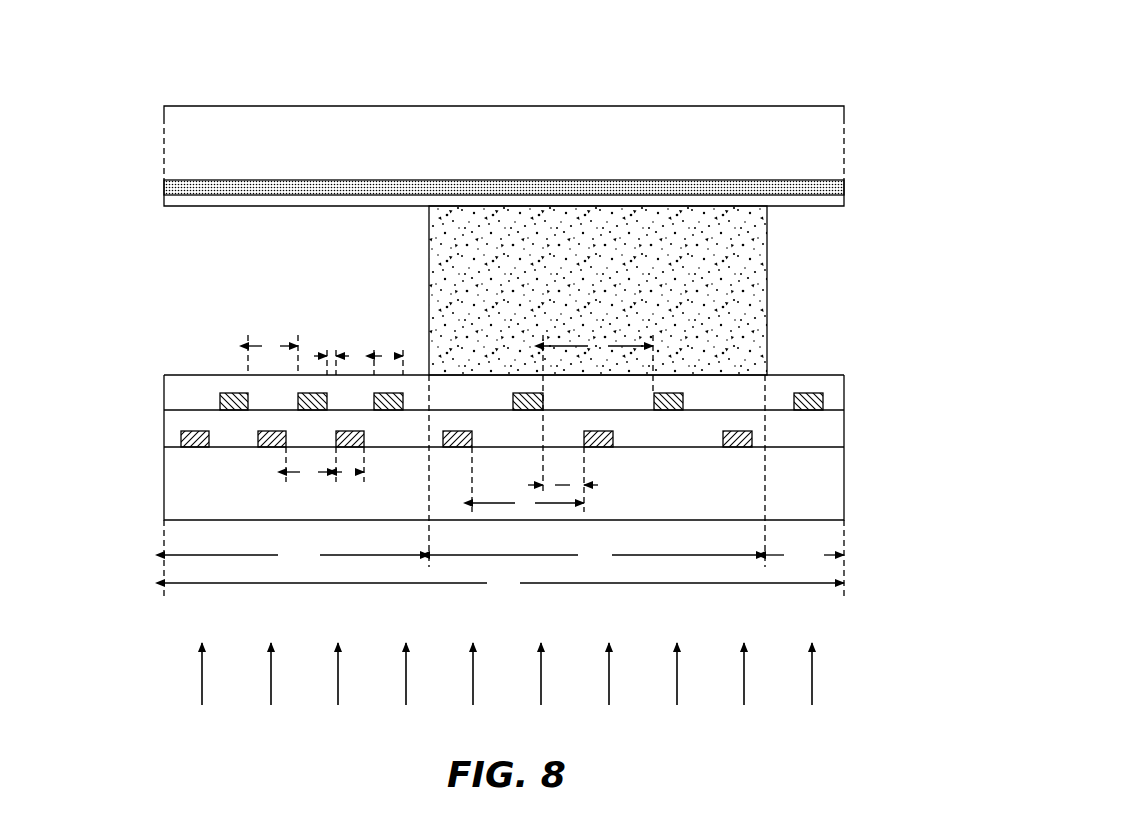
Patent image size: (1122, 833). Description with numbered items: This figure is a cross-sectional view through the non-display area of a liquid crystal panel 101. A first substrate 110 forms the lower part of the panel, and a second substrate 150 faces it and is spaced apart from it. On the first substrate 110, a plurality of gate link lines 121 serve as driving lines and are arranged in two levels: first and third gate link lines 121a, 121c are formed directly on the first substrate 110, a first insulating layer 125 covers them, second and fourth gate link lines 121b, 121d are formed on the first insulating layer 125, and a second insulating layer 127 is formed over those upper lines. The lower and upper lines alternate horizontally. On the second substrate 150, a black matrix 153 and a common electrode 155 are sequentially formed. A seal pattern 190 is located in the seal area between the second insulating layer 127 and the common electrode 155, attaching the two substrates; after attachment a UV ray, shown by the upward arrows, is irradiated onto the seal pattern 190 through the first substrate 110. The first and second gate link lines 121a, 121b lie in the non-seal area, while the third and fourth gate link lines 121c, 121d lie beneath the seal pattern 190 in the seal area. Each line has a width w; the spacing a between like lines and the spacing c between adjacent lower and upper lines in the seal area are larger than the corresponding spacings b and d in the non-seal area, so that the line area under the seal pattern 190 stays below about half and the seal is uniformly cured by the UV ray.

The liquid crystal panel 101 is at (786, 86).
The second substrate 150 is at (836, 138).
The black matrix 153 is at (845, 187).
The common electrode 155 is at (190, 203).
The seal pattern 190 is at (752, 297).
The second insulating layer 127 is at (190, 389).
The first insulating layer 125 is at (190, 425).
The first substrate 110 is at (816, 505).
The gate link lines 121 is at (502, 473).
The first gate link line 121a is at (352, 448).
The second gate link line 121b is at (396, 412).
The third gate link line 121c is at (603, 448).
The fourth gate link line 121d is at (668, 446).